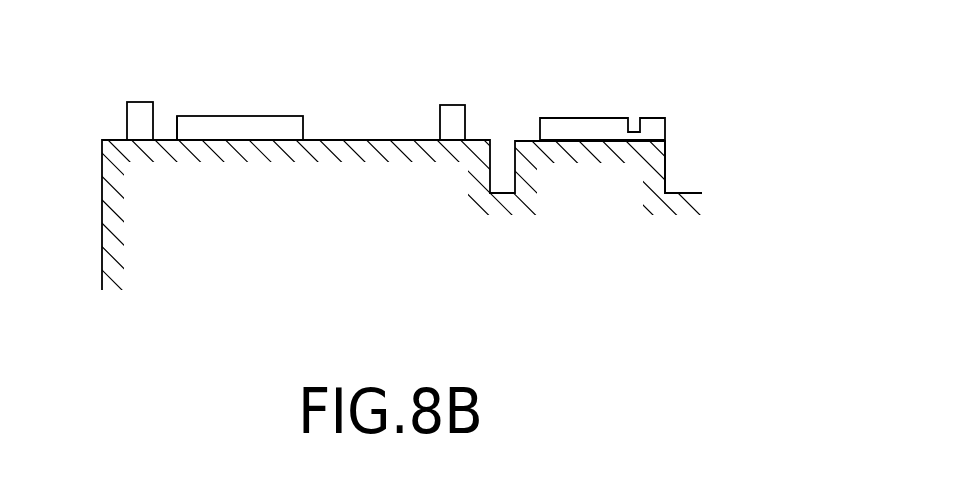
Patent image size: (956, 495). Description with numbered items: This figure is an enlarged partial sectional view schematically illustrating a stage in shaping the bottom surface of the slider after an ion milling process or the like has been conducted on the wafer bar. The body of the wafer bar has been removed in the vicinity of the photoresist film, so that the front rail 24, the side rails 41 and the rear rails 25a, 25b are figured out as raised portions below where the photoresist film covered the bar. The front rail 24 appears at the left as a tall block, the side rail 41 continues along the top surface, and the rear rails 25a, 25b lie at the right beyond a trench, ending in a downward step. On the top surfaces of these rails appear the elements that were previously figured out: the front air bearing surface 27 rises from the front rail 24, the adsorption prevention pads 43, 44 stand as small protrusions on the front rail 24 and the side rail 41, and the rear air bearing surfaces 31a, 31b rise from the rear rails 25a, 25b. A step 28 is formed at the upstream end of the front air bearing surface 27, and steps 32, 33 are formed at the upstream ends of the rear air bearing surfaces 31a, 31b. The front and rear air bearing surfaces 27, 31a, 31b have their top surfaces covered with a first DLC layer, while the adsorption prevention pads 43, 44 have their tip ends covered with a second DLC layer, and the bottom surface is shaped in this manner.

The front rail 24 is at (112, 140).
The adsorption prevention pad 43 is at (140, 102).
The front air bearing surface 27 is at (232, 116).
The step 28 is at (177, 130).
The side rail 41 is at (387, 140).
The adsorption prevention pad 44 is at (453, 105).
The step 32 is at (567, 82).
The step 33 is at (540, 138).
The rear air bearing surface 31a is at (613, 101).
The rear air bearing surface 31b is at (572, 118).
The rear rail 25a is at (739, 159).
The rear rail 25b is at (665, 176).